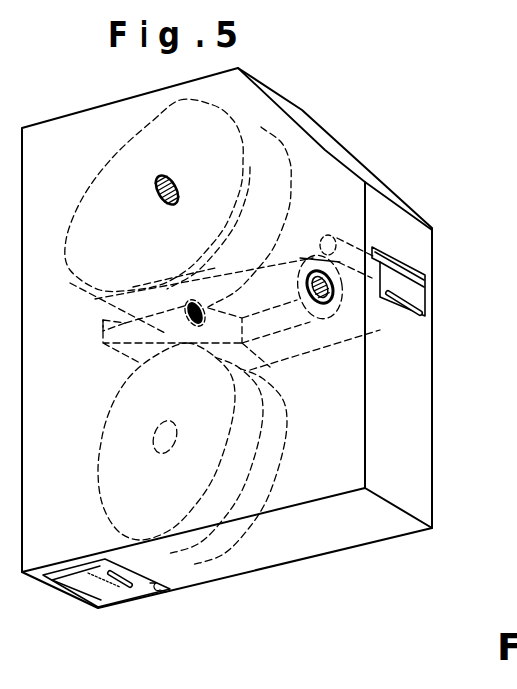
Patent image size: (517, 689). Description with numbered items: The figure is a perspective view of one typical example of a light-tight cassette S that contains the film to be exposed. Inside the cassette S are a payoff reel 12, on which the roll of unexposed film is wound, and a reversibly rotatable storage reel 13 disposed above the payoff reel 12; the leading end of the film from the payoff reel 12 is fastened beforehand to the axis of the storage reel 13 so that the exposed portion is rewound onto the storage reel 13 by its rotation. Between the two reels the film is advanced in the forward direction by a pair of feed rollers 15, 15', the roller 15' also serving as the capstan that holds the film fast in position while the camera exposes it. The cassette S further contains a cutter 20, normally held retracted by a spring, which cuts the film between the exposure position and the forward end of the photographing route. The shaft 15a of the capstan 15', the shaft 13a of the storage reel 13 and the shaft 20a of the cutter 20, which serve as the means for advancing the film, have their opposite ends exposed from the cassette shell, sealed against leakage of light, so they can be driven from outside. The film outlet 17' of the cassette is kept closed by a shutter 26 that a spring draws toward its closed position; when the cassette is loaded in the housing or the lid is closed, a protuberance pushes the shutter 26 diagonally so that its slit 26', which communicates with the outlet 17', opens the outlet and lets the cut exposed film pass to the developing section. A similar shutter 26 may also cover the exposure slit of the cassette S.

The cassette S is at (441, 477).
The payoff reel 12 is at (100, 448).
The storage reel 13 is at (130, 165).
The shaft of the storage reel 13a is at (163, 206).
The feed roller 15 is at (347, 229).
The capstan 15' is at (315, 234).
The shaft of the capstan 15a is at (317, 304).
The outlet of the cassette 17' is at (95, 620).
The cutter 20 is at (103, 332).
The shaft of the cutter 20a is at (195, 325).
The shutter 26 is at (234, 444).
The slit of the shutter 26' is at (265, 473).